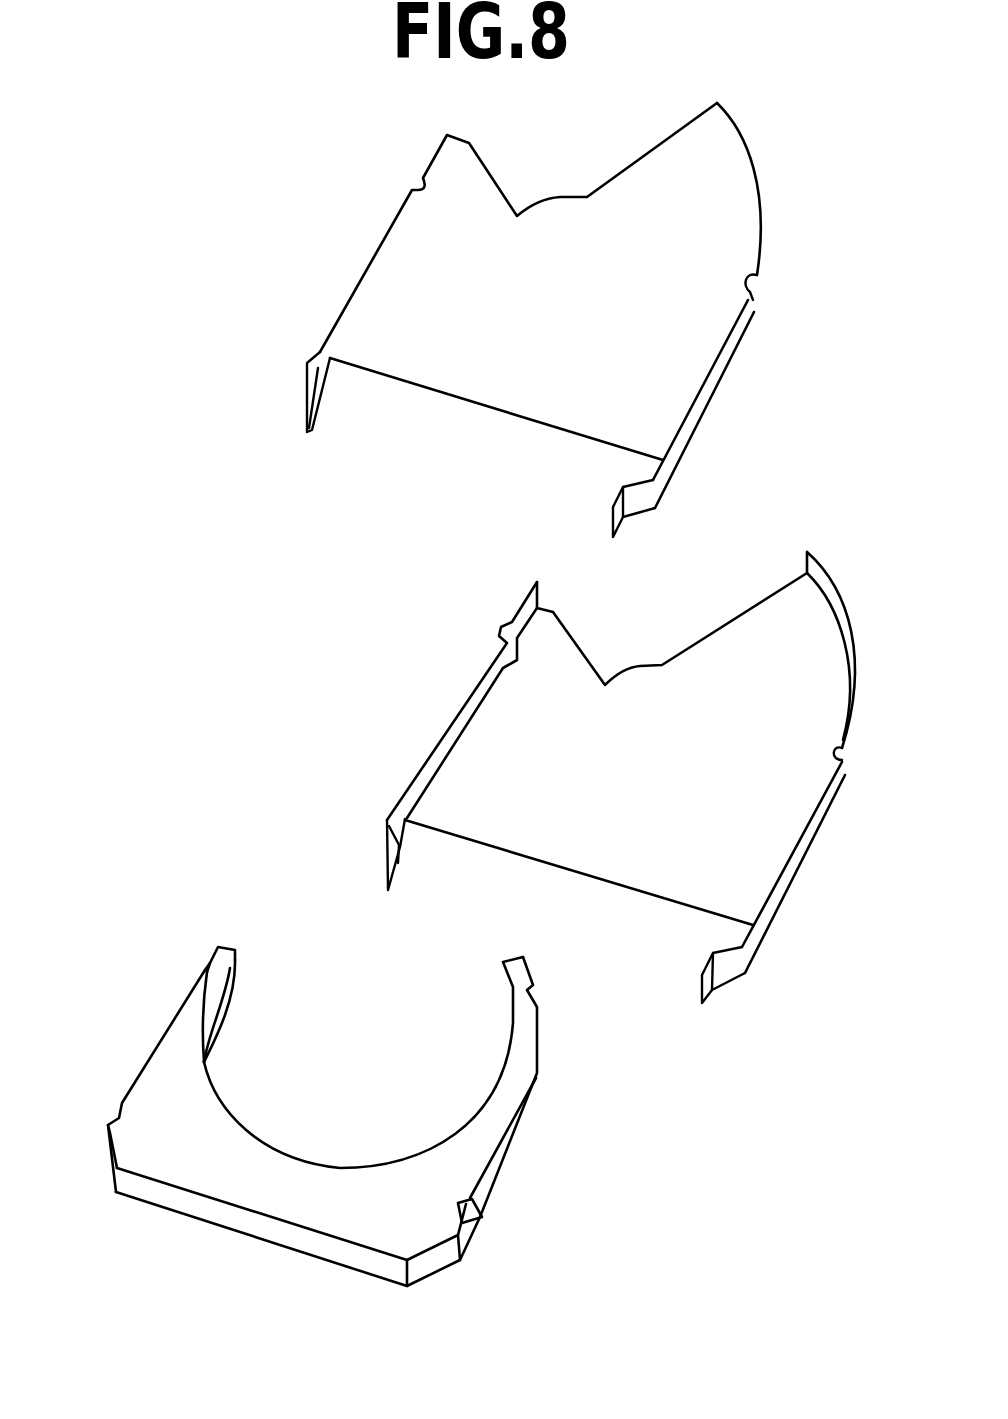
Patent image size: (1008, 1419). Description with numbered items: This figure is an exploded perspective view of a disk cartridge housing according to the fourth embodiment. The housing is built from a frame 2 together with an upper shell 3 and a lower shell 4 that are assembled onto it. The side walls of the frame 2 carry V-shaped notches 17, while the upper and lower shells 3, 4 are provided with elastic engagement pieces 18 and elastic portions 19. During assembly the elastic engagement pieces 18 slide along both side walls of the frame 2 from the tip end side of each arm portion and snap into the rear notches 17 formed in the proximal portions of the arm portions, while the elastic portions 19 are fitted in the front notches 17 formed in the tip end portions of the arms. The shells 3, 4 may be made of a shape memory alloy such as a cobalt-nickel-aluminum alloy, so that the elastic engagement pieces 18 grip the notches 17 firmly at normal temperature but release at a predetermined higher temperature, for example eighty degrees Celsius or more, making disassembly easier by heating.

The frame 2 is at (230, 1218).
The upper shell 3 is at (652, 160).
The lower shell 4 is at (577, 855).
The V-shaped notches 17 is at (207, 970).
The elastic engagement pieces 18 is at (317, 408).
The elastic portions 19 is at (413, 187).